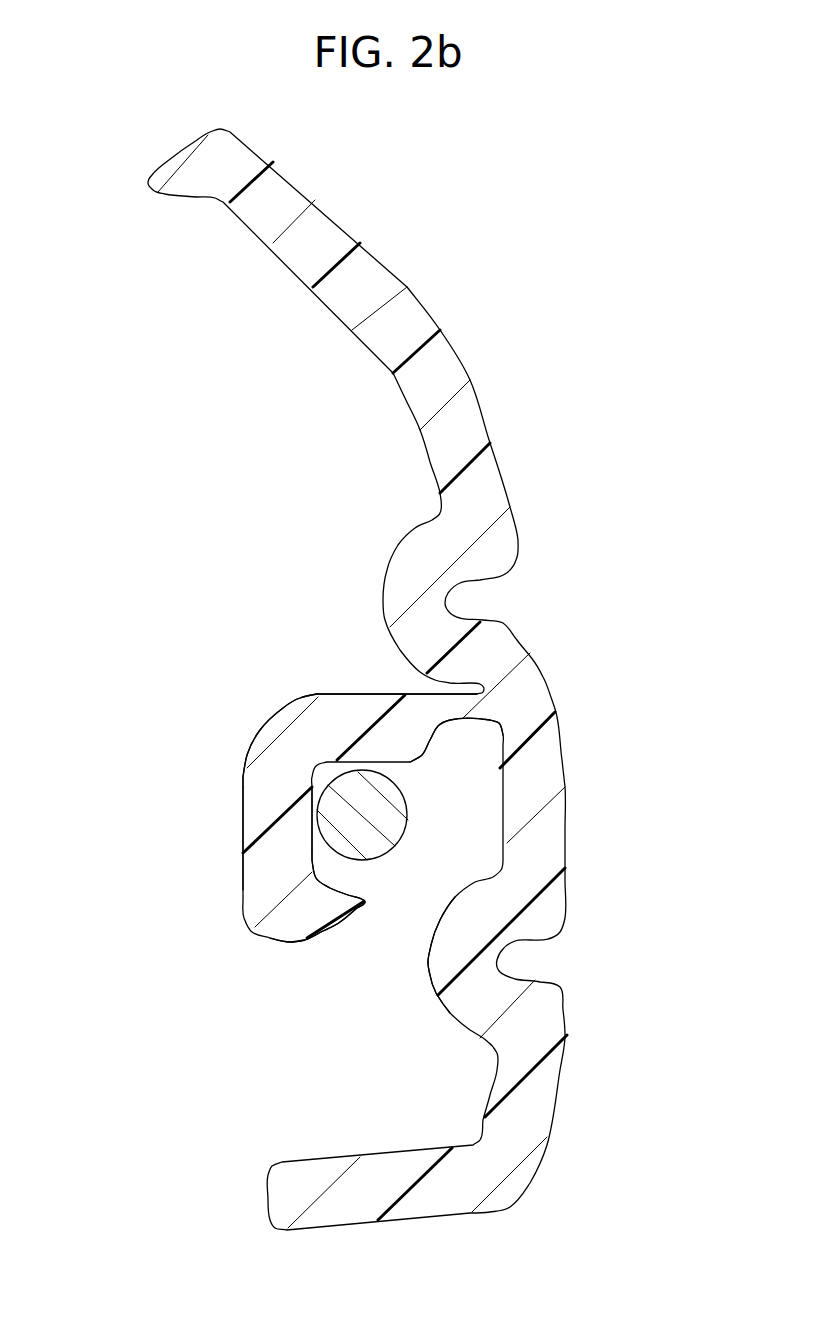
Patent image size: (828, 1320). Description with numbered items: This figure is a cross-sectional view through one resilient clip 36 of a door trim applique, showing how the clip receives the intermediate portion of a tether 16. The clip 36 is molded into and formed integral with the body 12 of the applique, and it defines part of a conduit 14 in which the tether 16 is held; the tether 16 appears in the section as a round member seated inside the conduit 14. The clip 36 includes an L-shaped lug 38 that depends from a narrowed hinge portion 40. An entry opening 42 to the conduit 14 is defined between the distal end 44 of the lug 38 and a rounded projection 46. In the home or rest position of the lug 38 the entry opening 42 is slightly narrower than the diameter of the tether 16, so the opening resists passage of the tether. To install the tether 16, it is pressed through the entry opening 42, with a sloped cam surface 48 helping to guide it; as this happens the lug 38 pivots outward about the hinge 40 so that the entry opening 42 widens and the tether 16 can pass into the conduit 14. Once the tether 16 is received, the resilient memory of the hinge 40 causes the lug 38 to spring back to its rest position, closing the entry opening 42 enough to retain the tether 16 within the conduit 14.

The body 12 is at (472, 423).
The conduit 14 is at (458, 810).
The tether 16 is at (340, 808).
The resilient clip 36 is at (213, 793).
The L-shaped lug 38 is at (265, 868).
The narrowed hinge portion 40 is at (457, 718).
The entry opening 42 is at (402, 912).
The distal end 44 is at (370, 905).
The rounded projection 46 is at (428, 960).
The sloped cam surface 48 is at (332, 928).